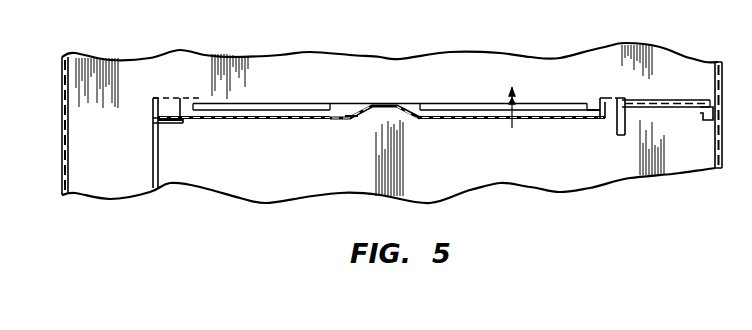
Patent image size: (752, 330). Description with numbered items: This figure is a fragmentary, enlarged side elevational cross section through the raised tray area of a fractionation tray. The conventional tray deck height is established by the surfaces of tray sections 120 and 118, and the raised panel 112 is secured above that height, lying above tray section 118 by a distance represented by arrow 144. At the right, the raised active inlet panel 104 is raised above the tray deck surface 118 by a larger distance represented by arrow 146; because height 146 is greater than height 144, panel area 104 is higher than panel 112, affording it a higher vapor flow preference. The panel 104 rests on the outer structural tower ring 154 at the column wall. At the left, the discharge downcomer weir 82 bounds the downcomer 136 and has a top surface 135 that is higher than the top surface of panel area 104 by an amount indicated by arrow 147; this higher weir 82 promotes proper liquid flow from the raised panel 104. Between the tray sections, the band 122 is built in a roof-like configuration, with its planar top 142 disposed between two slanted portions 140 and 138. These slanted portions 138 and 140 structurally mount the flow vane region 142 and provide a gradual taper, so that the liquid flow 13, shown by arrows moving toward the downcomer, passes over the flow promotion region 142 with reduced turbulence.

The liquid flow 13 is at (251, 97).
The discharge downcomer weir 82 is at (153, 104).
The raised active inlet panel 104 is at (675, 98).
The raised panel 112 is at (550, 102).
The tray section 118 is at (468, 120).
The tray section 120 is at (258, 122).
The band 122 is at (373, 105).
The top surface 135 is at (157, 98).
The downcomer 136 is at (121, 168).
The slanted portion 138 is at (417, 103).
The slanted portion 140 is at (360, 105).
The top 142 is at (383, 105).
The arrow 144 is at (518, 107).
The arrow 146 is at (600, 116).
The arrow 147 is at (189, 123).
The outer structural tower ring 154 is at (707, 118).